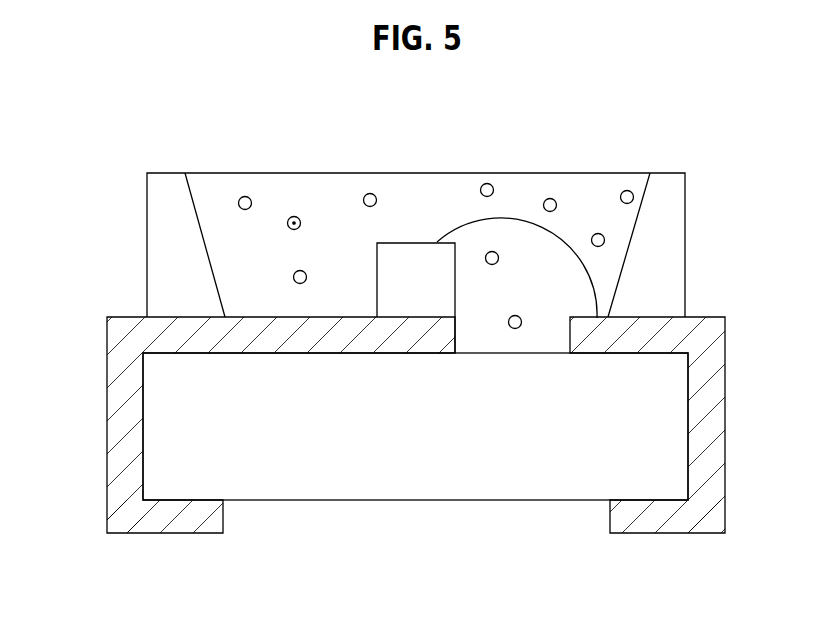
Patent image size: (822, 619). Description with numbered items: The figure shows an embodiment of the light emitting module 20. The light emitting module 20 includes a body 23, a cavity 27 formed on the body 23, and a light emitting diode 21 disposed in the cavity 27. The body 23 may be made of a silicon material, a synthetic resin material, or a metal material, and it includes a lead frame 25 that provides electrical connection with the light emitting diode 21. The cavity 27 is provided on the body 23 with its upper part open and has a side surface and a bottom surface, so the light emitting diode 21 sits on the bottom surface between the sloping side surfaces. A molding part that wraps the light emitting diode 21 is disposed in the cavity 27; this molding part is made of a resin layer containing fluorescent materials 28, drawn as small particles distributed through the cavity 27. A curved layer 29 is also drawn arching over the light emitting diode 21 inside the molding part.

The light emitting module 20 is at (53, 120).
The light emitting diode 21 is at (413, 250).
The body 23 is at (530, 485).
The lead frame 25 is at (117, 475).
The cavity 27 is at (208, 185).
The fluorescent materials 28 is at (294, 217).
The phosphor layer 29 is at (558, 236).